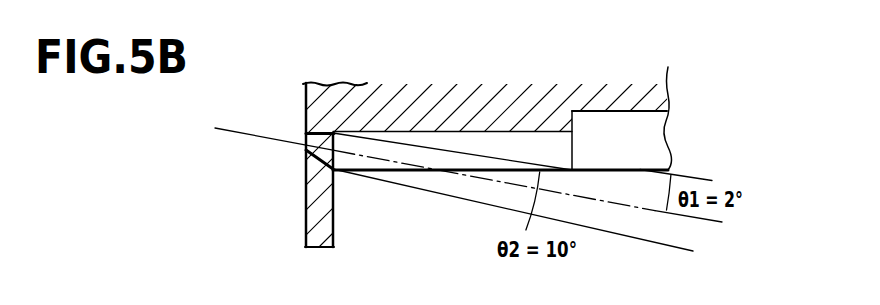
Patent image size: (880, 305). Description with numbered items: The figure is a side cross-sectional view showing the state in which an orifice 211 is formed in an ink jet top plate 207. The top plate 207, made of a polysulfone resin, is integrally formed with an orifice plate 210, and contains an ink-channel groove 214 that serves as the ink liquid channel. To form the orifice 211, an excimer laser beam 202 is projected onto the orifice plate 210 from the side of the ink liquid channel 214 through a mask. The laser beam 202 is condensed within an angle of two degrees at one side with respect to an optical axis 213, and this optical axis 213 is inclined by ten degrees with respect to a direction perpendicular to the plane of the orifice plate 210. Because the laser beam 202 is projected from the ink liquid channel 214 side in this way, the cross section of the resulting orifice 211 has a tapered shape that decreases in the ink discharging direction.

The top plate 207 is at (458, 97).
The orifice plate 210 is at (322, 230).
The orifice 211 is at (306, 148).
The ink-channel groove 214 is at (427, 158).
The optical axis 213 is at (698, 216).
The excimer laser beam 202 is at (627, 228).